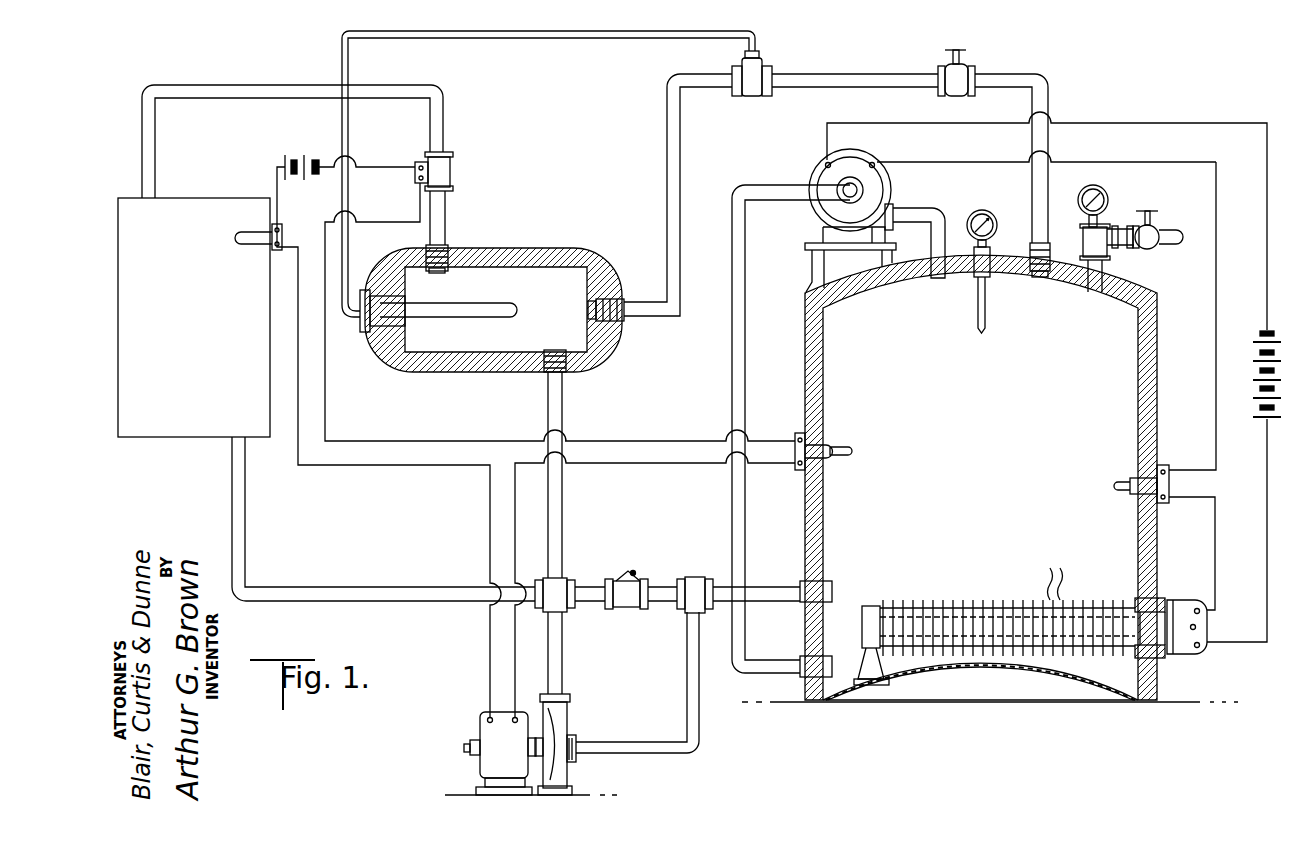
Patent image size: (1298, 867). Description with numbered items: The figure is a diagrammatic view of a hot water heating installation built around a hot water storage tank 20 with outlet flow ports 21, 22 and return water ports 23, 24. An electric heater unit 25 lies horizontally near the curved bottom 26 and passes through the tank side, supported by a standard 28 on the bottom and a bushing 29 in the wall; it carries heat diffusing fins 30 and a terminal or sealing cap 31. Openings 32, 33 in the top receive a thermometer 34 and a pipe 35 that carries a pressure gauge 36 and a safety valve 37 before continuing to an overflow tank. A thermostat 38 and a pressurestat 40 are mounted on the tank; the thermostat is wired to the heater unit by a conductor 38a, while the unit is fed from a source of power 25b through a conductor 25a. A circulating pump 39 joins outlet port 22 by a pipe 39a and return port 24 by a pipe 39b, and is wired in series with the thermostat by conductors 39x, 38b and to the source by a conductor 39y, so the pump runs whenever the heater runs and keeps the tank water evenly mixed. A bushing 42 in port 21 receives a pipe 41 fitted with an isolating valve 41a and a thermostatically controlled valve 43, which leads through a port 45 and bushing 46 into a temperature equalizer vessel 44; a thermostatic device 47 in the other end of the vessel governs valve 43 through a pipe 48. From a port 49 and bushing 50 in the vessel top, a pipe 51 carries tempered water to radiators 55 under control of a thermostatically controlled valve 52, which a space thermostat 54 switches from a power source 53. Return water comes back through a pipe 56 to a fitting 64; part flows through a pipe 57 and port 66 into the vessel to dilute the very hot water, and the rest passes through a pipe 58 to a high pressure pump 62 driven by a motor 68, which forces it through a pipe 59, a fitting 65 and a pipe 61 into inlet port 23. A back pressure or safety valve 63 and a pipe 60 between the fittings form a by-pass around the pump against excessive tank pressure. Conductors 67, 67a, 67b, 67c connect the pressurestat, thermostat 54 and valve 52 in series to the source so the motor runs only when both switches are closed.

The hot water storage tank 20 is at (793, 373).
The outlet flow port 21 is at (1044, 278).
The outlet flow port 22 is at (932, 272).
The return water port 23 is at (830, 590).
The return water port 24 is at (818, 665).
The electric heater unit 25 is at (966, 593).
The conductor 25a is at (1266, 578).
The source of power 25b is at (1258, 352).
The curved bottom 26 is at (1015, 672).
The standard 28 is at (882, 667).
The bushing 29 is at (1166, 656).
The heat diffusing fins 30 is at (1062, 576).
The terminal or sealing cap 31 is at (1183, 600).
The opening 32 is at (990, 278).
The opening 33 is at (1110, 282).
The thermometer 34 is at (985, 212).
The pipe 35 is at (1170, 232).
The pressure gauge 36 is at (1104, 200).
The safety valve 37 is at (1148, 224).
The thermostat 38 is at (1130, 480).
The conductor 38a is at (1215, 532).
The conductor 38b is at (1215, 436).
The circulating pump 39 is at (830, 183).
The pipe 39a is at (928, 210).
The pipe 39b is at (729, 381).
The conductor 39x is at (965, 162).
The conductor 39y is at (1205, 123).
The pressurestat 40 is at (830, 460).
The pipe 41 is at (667, 163).
The isolating valve 41a is at (962, 72).
The bushing 42 is at (1046, 258).
The thermostatically controlled valve 43 is at (760, 70).
The temperature equalizer vessel 44 is at (510, 245).
The port 45 is at (619, 297).
The bushing 46 is at (620, 320).
The thermostatic device 47 is at (440, 320).
The pipe 48 is at (542, 38).
The port 49 is at (446, 255).
The bushing 50 is at (447, 270).
The pipe 51 is at (228, 88).
The thermostatically controlled valve 52 is at (440, 175).
The power source 53 is at (300, 158).
The thermostat 54 is at (258, 250).
The radiators 55 is at (194, 317).
The pipe 56 is at (331, 587).
The pipe 57 is at (563, 400).
The pipe 58 is at (563, 640).
The pipe 59 is at (626, 745).
The pipe 60 is at (660, 602).
The pipe 61 is at (776, 585).
The high pressure pump 62 is at (560, 722).
The back pressure or safety valve 63 is at (625, 578).
The fitting 64 is at (566, 604).
The fitting 65 is at (695, 578).
The port 66 is at (545, 372).
The conductor 67 is at (326, 374).
The conductor 67a is at (773, 440).
The conductor 67b is at (298, 452).
The conductor 67c is at (773, 466).
The motor 68 is at (492, 735).